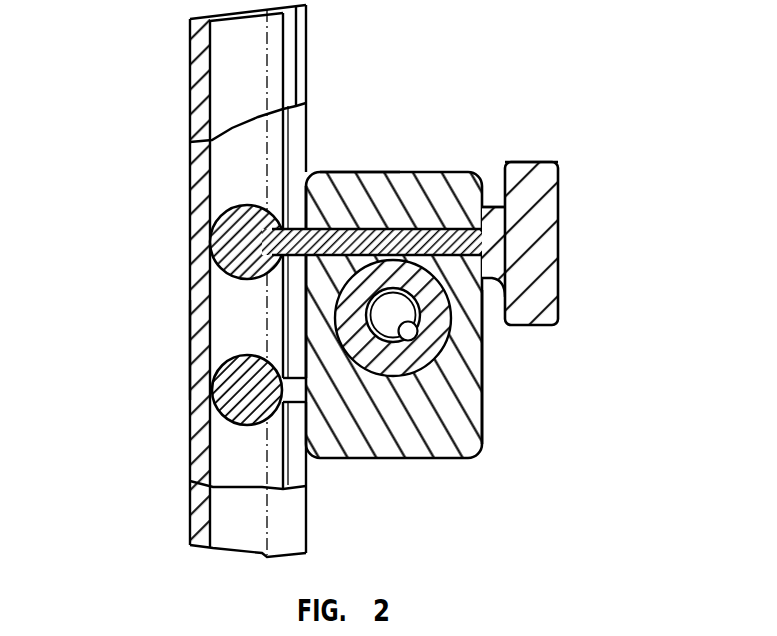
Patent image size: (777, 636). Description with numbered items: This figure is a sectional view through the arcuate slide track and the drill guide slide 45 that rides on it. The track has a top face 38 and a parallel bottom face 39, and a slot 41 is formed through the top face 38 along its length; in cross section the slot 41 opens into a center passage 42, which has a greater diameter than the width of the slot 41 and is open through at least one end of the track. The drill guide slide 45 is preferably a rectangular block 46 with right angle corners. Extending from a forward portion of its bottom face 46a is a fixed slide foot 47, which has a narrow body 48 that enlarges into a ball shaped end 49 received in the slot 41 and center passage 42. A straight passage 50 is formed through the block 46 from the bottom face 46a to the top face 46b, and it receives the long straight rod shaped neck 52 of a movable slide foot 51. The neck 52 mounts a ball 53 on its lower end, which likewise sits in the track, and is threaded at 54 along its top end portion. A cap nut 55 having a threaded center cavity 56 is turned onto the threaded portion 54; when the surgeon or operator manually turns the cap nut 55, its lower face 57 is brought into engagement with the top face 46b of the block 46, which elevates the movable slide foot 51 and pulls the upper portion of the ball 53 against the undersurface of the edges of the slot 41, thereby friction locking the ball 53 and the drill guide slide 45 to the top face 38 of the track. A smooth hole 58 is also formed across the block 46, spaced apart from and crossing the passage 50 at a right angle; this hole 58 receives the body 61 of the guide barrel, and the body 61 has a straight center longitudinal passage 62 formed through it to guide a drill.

The top face 38 is at (307, 50).
The bottom face 39 is at (190, 343).
The slot 41 is at (287, 150).
The center passage 42 is at (230, 163).
The drill guide slide 45 is at (449, 106).
The rectangular block 46 is at (482, 370).
The bottom face 46a is at (306, 318).
The top face 46b is at (482, 347).
The fixed slide foot 47 is at (270, 434).
The narrow body 48 is at (293, 390).
The ball shaped end 49 is at (213, 390).
The straight passage 50 is at (410, 222).
The movable slide foot 51 is at (352, 208).
The neck 52 is at (555, 313).
The ball 53 is at (213, 225).
The threaded portion 54 is at (513, 247).
The cap nut 55 is at (548, 226).
The threaded center cavity 56 is at (487, 203).
The cap nut lower face 57 is at (478, 222).
The smooth hole 58 is at (422, 356).
The body 61 is at (418, 352).
The center longitudinal passage 62 is at (388, 363).